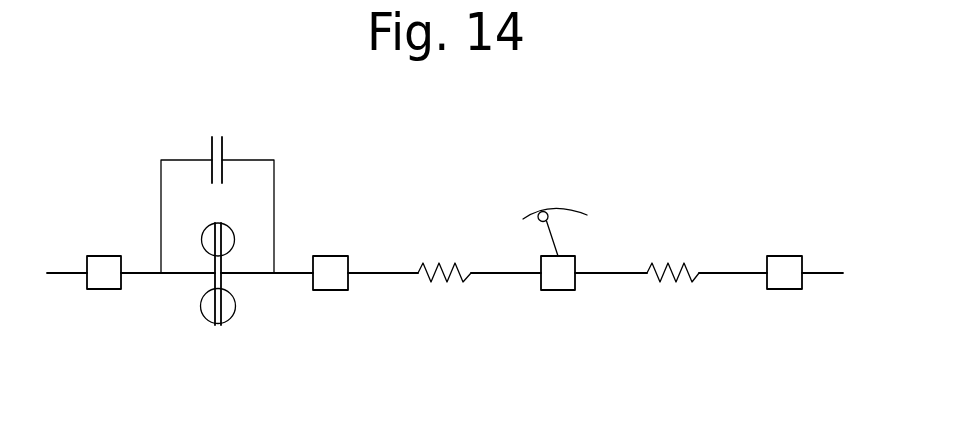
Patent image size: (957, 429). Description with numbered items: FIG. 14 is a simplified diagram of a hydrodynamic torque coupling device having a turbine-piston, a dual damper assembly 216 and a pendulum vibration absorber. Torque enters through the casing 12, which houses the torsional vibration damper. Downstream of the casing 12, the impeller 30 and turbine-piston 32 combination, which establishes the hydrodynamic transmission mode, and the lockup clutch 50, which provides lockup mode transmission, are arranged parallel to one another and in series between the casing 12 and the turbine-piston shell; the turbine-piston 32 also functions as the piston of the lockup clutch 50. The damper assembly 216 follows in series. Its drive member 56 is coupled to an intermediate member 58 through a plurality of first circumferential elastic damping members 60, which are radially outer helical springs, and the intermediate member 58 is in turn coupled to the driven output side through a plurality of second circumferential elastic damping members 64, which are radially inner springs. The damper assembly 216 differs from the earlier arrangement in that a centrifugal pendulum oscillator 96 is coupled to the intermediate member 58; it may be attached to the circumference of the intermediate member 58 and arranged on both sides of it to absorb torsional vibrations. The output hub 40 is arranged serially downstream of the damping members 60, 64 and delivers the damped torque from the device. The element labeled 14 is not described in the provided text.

The casing 12 is at (101, 262).
The electrode assembly 14 is at (187, 215).
The impeller 30 is at (200, 313).
The turbine-piston 32 is at (236, 313).
The lockup clutch 50 is at (243, 136).
The drive member 56 is at (334, 262).
The intermediate member 58 is at (554, 284).
The first circumferential elastic damping members 60 is at (436, 284).
The second circumferential elastic damping members 64 is at (664, 284).
The centrifugal pendulum oscillator 96 is at (574, 199).
The damper assembly 216 is at (624, 242).
The output hub 40 is at (785, 262).